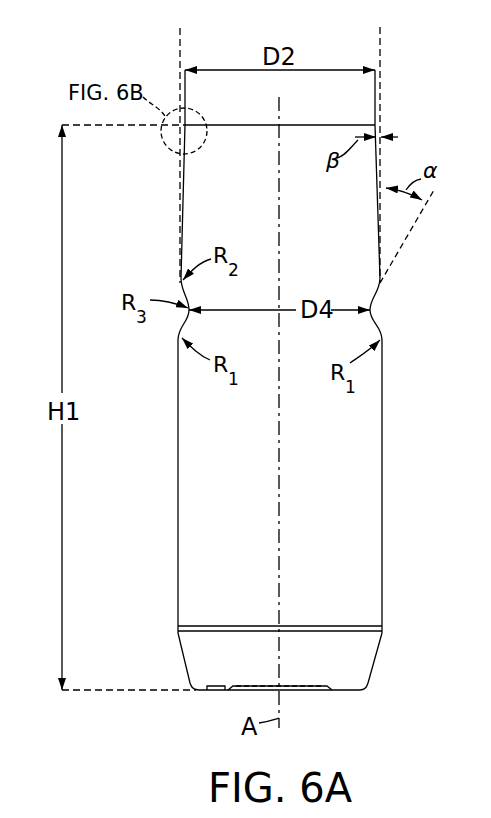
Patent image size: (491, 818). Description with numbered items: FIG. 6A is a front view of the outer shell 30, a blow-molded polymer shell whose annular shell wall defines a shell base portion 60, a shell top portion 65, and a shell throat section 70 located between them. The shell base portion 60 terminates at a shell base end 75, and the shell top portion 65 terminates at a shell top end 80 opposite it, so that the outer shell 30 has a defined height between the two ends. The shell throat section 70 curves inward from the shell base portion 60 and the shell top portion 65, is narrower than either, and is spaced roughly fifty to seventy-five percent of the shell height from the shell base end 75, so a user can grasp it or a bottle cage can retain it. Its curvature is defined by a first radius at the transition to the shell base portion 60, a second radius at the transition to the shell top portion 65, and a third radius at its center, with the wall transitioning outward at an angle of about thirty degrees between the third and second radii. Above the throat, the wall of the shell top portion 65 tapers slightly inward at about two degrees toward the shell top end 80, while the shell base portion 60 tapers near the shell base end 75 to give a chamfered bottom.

The outer shell 30 is at (78, 48).
The shell base portion 60 is at (200, 525).
The shell top portion 65 is at (198, 213).
The shell throat section 70 is at (352, 289).
The shell base end 75 is at (343, 691).
The shell top end 80 is at (318, 124).